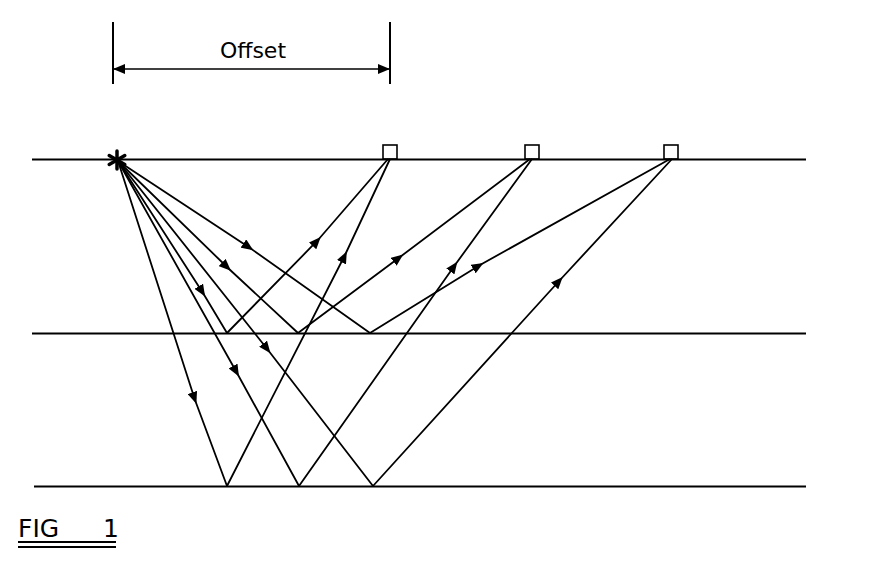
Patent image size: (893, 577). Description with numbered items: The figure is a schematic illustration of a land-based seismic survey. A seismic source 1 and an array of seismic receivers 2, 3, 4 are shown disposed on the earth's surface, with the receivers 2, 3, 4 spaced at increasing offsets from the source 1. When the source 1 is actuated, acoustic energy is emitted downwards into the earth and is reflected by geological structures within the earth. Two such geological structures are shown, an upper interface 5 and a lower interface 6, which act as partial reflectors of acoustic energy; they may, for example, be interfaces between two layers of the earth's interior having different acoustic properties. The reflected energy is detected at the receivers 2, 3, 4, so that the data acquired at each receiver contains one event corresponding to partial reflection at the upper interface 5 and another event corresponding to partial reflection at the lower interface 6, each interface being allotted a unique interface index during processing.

The seismic source 1 is at (117, 139).
The seismic receiver 2 is at (391, 134).
The seismic receiver 3 is at (532, 134).
The seismic receiver 4 is at (672, 134).
The upper interface 5 is at (429, 334).
The lower interface 6 is at (430, 487).